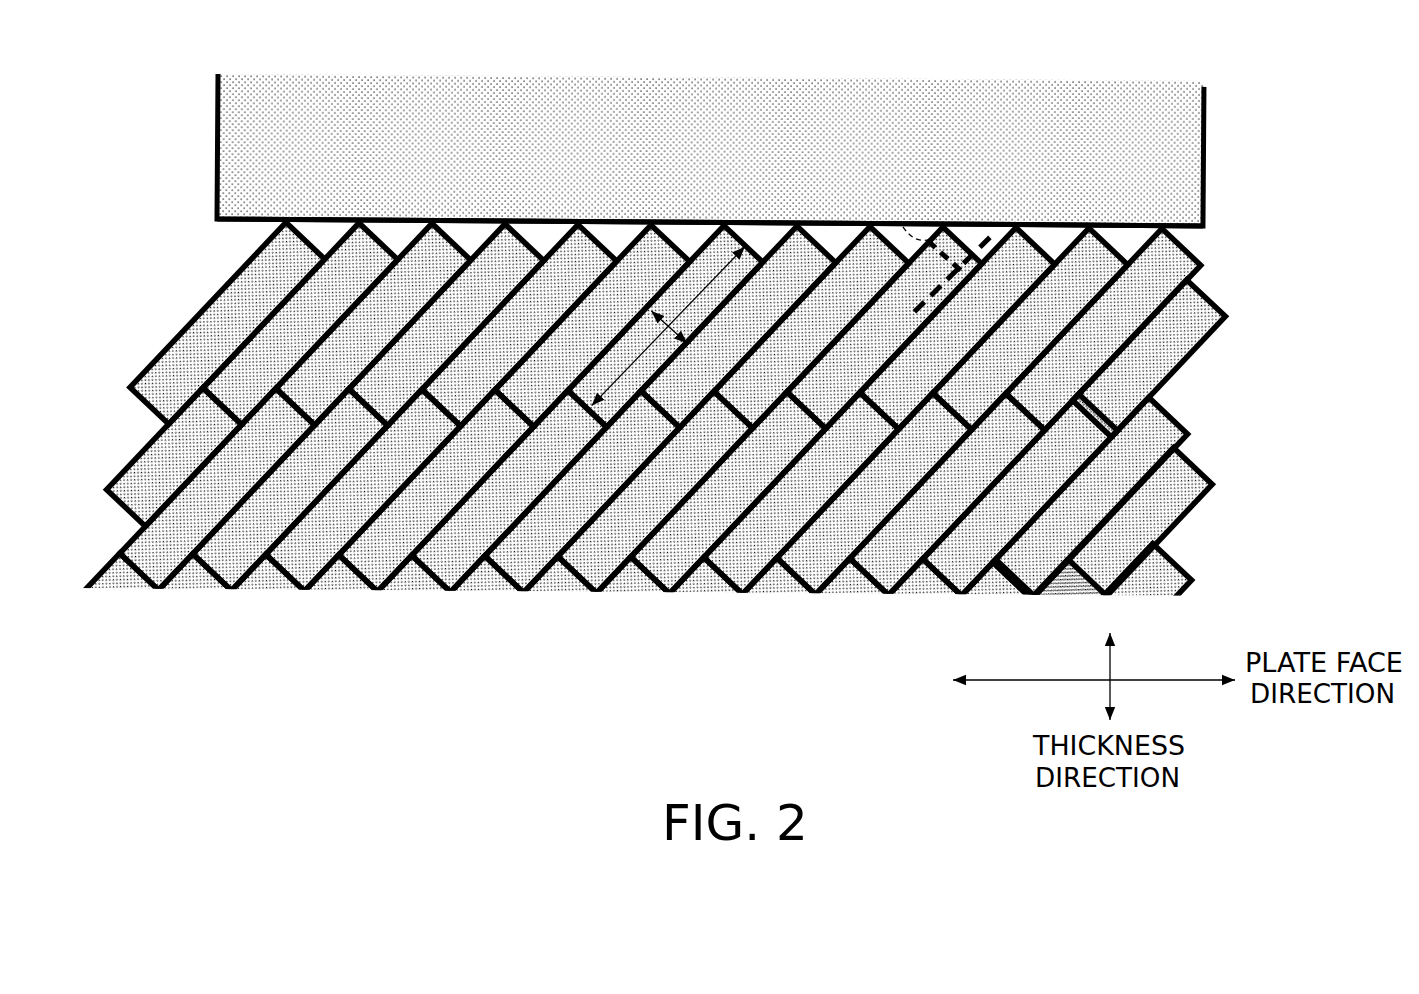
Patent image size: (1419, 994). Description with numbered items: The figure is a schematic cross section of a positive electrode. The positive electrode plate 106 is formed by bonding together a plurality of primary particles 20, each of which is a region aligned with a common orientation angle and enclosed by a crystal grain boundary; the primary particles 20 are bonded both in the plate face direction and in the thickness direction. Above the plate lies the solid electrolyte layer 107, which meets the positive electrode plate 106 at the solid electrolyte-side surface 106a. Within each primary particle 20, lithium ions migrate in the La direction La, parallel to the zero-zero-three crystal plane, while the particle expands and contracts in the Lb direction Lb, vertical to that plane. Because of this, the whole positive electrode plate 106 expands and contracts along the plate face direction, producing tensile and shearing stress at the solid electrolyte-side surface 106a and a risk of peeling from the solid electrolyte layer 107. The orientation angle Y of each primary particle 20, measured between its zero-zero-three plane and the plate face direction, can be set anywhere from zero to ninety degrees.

The solid electrolyte layer 107 is at (1228, 217).
The solid electrolyte-side surface 106a is at (1208, 226).
The positive electrode plate 106 is at (662, 492).
The primary particle 20 is at (148, 348).
The La direction La is at (613, 386).
The Lb direction Lb is at (672, 325).
The orientation angle Y is at (897, 218).